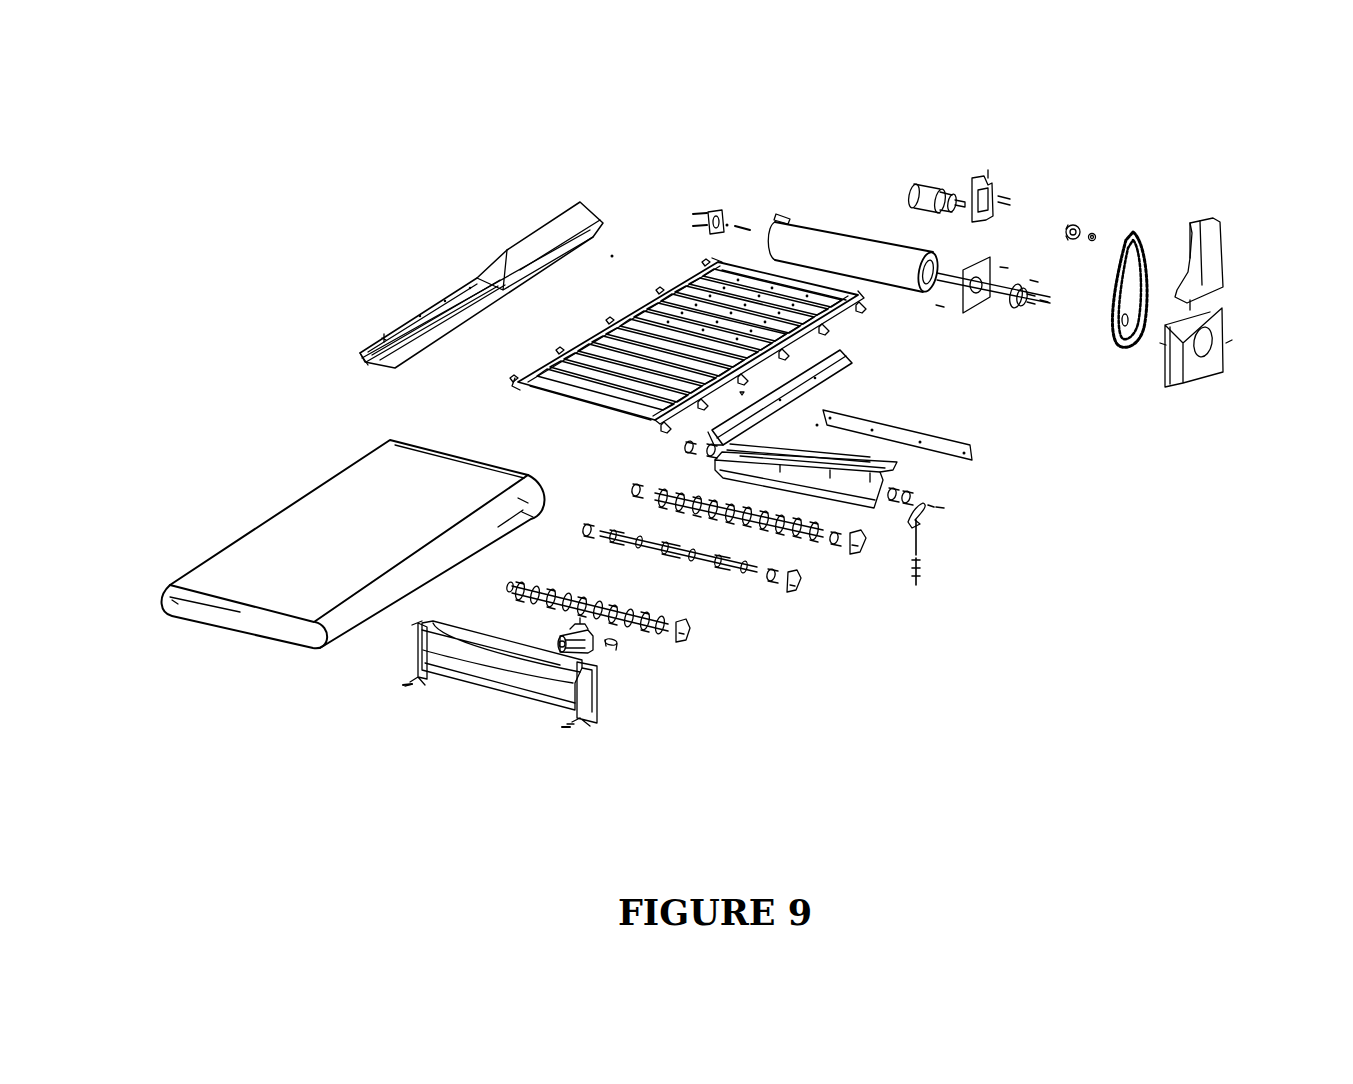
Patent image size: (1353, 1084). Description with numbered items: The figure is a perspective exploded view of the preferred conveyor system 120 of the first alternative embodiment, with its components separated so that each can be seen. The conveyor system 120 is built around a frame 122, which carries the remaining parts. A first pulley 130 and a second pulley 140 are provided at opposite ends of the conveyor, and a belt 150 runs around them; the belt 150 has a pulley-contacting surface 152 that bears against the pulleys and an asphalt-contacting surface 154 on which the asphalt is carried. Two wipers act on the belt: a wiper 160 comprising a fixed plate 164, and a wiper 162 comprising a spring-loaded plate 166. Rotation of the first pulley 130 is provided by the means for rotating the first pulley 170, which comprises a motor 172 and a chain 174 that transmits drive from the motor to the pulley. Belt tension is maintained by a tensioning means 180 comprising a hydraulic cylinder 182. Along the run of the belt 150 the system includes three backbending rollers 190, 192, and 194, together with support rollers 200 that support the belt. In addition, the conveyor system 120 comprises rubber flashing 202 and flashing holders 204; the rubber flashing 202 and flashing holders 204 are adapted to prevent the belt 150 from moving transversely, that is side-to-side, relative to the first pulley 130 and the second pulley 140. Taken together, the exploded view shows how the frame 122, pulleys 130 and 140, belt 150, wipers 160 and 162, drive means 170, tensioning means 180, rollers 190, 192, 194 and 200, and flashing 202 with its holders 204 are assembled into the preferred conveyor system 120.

The conveyor system 120 is at (335, 345).
The frame 122 is at (690, 272).
The first pulley 130 is at (810, 216).
The second pulley 140 is at (478, 647).
The belt 150 is at (291, 510).
The pulley-contacting surface 152 is at (526, 500).
The asphalt-contacting surface 154 is at (246, 565).
The wiper 160 is at (985, 447).
The wiper 162 is at (948, 520).
The fixed plate 164 is at (950, 433).
The spring-loaded plate 166 is at (890, 478).
The means for rotating the first pulley 170 is at (1229, 238).
The motor 172 is at (922, 183).
The chain 174 is at (1130, 232).
The tensioning means 180 is at (630, 647).
The hydraulic cylinder 182 is at (597, 645).
The backbending roller 190 is at (690, 635).
The backbending roller 192 is at (749, 575).
The backbending roller 194 is at (812, 538).
The support rollers 200 is at (566, 405).
The rubber flashing 202 is at (851, 375).
The flashing holders 204 is at (471, 275).